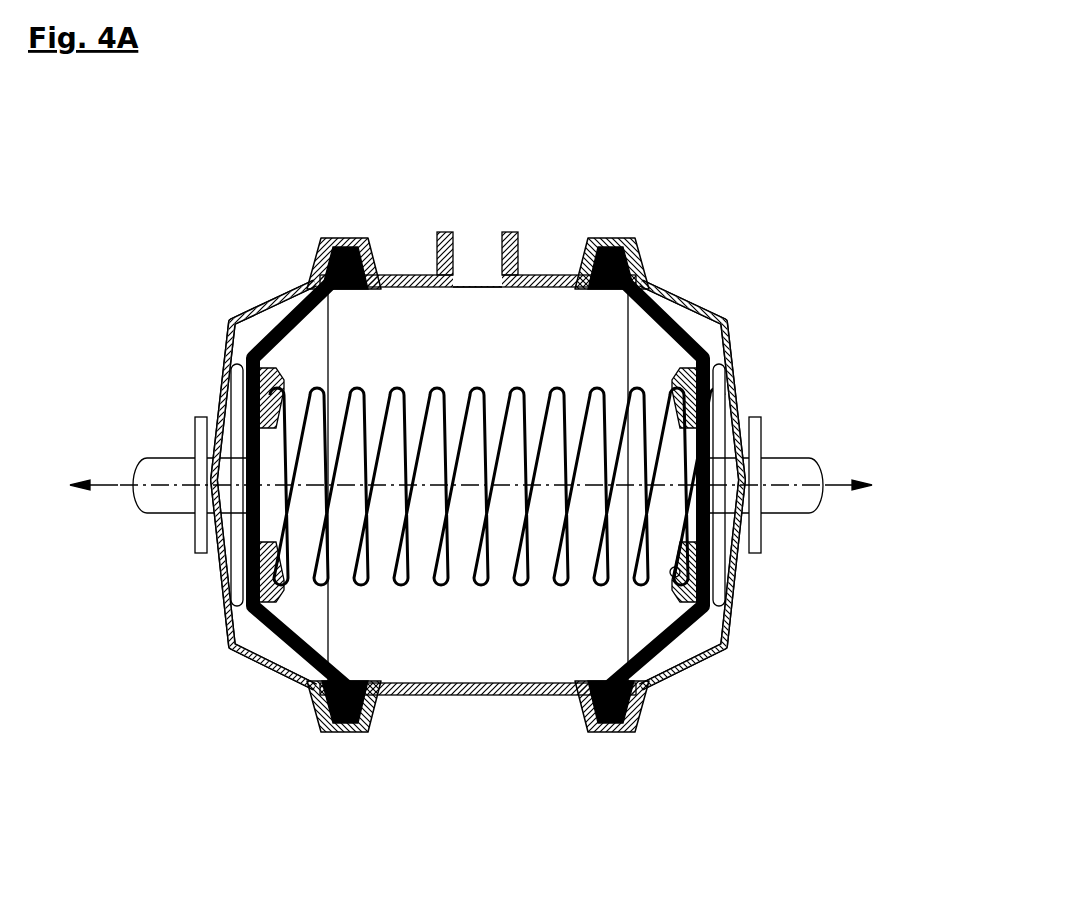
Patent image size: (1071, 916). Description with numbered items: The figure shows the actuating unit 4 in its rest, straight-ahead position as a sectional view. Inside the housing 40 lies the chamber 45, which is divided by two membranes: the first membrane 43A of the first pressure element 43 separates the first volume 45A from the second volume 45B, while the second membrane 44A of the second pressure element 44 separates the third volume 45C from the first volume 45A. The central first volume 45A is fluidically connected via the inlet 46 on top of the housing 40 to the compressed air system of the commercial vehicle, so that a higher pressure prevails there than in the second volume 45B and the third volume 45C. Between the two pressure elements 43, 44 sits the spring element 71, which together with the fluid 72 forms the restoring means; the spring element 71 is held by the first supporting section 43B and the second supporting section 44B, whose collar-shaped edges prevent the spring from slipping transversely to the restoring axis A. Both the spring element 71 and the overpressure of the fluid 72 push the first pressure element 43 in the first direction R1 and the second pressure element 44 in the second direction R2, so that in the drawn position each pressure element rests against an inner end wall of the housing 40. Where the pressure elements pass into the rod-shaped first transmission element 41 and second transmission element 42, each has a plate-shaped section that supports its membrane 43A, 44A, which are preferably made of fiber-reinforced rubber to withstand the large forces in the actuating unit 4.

The actuating unit 4 is at (488, 452).
The housing 40 is at (668, 293).
The first transmission element 41 is at (778, 475).
The second transmission element 42 is at (168, 505).
The first pressure element 43 is at (885, 360).
The first membrane 43A is at (670, 347).
The first supporting section 43B is at (705, 378).
The second pressure element 44 is at (108, 272).
The second membrane 44A is at (290, 320).
The second supporting section 44B is at (242, 335).
The chamber 45 is at (200, 790).
The first volume 45A is at (542, 325).
The second volume 45B is at (690, 650).
The third volume 45C is at (265, 652).
The inlet 46 is at (440, 232).
The spring element 71 is at (535, 320).
The fluid 72 is at (472, 338).
The restoring axis A is at (790, 513).
The first direction R1 is at (847, 488).
The second direction R2 is at (75, 532).